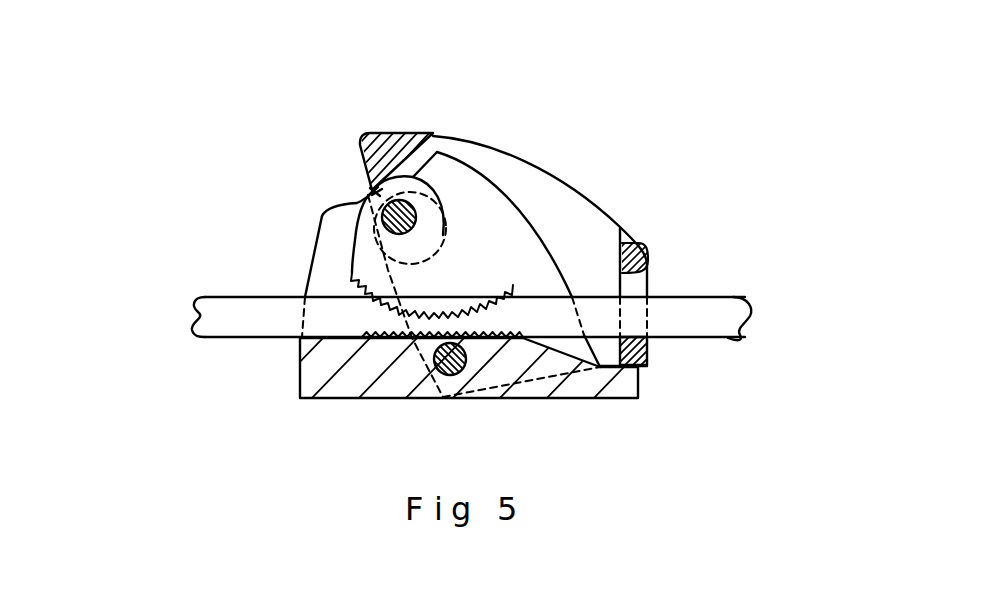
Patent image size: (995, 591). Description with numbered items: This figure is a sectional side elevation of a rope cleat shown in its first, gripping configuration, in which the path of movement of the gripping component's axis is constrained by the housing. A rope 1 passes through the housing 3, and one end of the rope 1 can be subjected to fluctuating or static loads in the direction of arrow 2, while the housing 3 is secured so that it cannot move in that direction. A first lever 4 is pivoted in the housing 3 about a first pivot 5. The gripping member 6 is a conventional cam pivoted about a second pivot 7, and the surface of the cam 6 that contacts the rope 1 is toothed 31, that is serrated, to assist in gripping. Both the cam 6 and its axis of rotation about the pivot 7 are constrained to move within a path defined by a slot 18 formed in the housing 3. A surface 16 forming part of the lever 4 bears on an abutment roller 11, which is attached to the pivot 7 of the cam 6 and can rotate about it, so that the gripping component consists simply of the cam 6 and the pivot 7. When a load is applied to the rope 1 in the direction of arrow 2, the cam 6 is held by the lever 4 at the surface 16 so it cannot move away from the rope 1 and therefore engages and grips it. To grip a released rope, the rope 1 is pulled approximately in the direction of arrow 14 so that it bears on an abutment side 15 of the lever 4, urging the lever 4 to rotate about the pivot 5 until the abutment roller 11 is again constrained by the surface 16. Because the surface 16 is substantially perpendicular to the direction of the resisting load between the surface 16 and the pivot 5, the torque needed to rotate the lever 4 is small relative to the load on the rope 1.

The rope 1 is at (255, 313).
The arrow 2 is at (190, 317).
The housing 3 is at (367, 358).
The first lever 4 is at (583, 220).
The first pivot 5 is at (422, 334).
The gripping member 6 is at (457, 268).
The second pivot 7 is at (400, 212).
The abutment roller 11 is at (357, 203).
The arrow 14 is at (765, 323).
The abutment side 15 is at (647, 360).
The surface 16 is at (367, 130).
The slot 18 is at (363, 186).
The toothed surface 31 is at (632, 244).